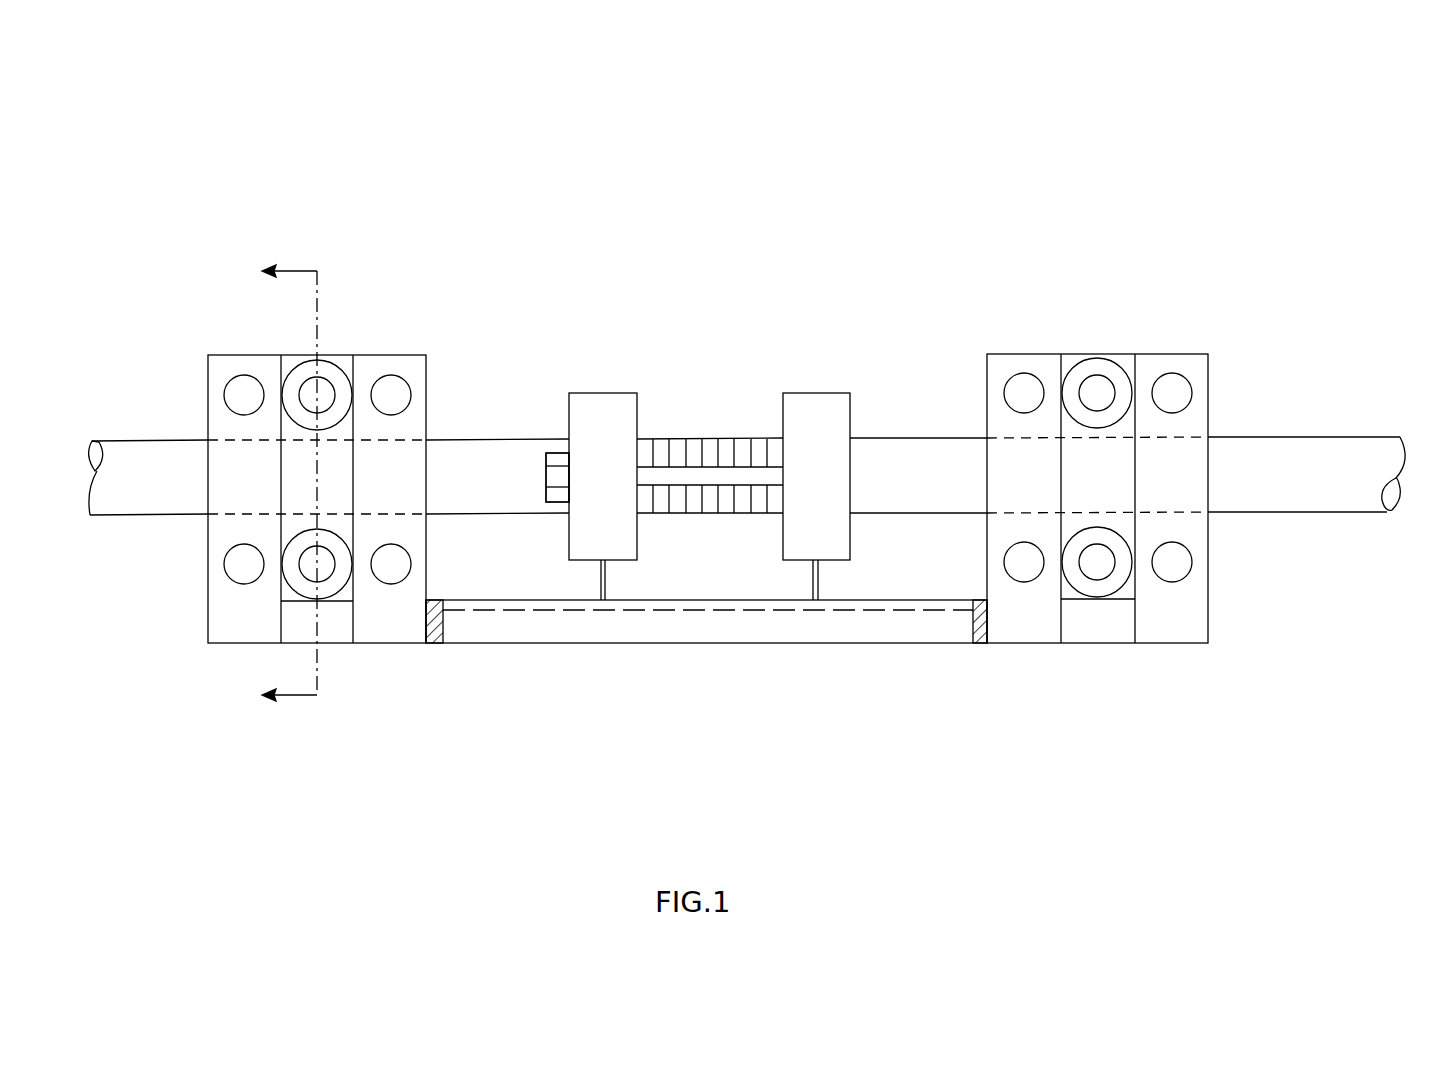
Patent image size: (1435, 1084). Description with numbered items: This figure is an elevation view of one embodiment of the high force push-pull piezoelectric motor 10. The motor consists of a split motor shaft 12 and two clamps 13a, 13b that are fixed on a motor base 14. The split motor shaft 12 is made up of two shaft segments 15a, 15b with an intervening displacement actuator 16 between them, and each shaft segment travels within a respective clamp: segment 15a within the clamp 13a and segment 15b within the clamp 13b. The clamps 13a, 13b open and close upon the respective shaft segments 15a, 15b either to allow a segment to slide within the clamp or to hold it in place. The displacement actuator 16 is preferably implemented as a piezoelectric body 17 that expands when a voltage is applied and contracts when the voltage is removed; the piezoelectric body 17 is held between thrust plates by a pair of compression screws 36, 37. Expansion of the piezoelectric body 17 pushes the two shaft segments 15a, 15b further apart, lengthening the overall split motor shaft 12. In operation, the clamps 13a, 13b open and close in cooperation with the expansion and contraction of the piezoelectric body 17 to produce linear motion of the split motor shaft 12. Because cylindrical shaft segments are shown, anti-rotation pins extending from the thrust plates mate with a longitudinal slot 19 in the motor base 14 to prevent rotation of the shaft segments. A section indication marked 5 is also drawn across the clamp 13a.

The push-pull piezoelectric motor 10 is at (772, 192).
The split motor shaft 12 is at (664, 348).
The clamp 13a is at (280, 355).
The clamp 13b is at (1208, 353).
The motor base 14 is at (716, 644).
The shaft segment 15a is at (505, 437).
The shaft segment 15b is at (890, 437).
The displacement actuator 16 is at (743, 437).
The piezoelectric body 17 is at (810, 577).
The longitudinal slot 19 is at (898, 612).
The compression screw 36 is at (545, 478).
The compression screw 37 is at (557, 477).
The section line 5- 5 is at (275, 486).